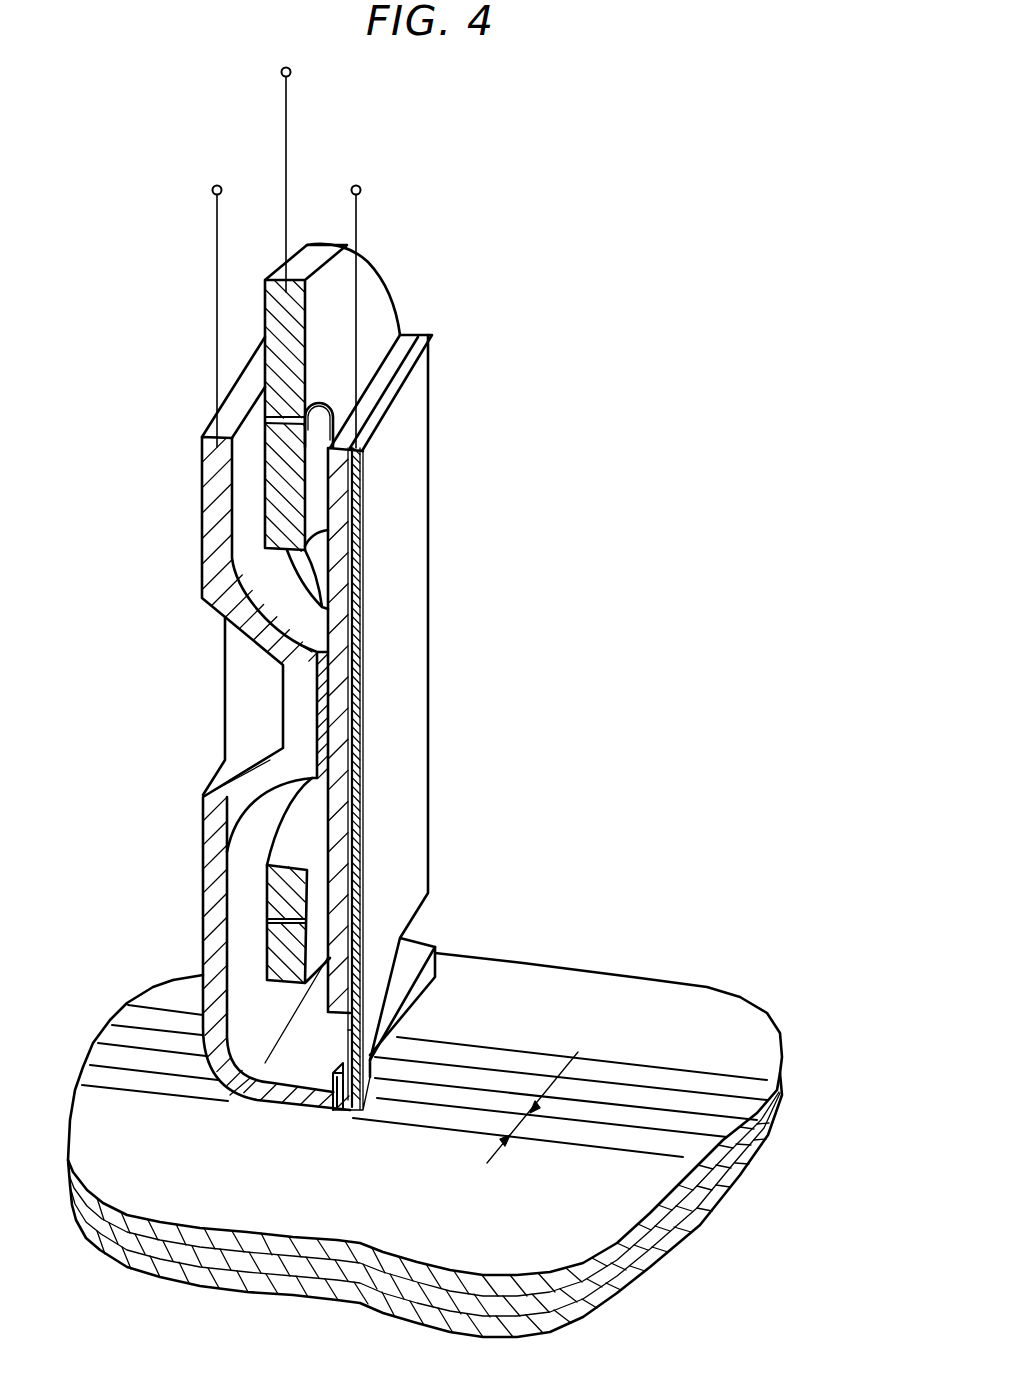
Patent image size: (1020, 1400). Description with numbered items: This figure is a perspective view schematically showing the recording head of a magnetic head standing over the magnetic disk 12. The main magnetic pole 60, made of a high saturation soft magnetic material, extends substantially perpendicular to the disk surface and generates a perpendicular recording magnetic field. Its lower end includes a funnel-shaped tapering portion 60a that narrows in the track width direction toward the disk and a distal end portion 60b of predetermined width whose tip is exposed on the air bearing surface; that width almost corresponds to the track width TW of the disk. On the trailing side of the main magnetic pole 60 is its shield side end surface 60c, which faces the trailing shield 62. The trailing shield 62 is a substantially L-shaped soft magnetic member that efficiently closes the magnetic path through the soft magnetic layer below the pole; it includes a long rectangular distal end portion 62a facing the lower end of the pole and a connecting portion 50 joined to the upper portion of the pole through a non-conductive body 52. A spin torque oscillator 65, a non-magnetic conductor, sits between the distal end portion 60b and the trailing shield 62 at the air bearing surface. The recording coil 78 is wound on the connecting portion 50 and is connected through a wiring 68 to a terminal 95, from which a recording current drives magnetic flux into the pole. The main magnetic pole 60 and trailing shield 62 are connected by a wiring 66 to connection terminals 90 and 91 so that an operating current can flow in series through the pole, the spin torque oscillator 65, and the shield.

The magnetic disk 12 is at (640, 1010).
The connecting portion 50 is at (290, 713).
The non-conductive body 52 is at (323, 677).
The main magnetic pole 60 is at (415, 638).
The tapering portion 60a is at (415, 985).
The distal end portion 60b is at (376, 1100).
The shield side end surface 60c is at (347, 1028).
The trailing shield 62 is at (202, 885).
The distal end portion 62a is at (252, 1094).
The spin torque oscillator 65 is at (337, 1123).
The wiring 66 is at (358, 308).
The wiring 68 is at (286, 103).
The recording coil 78 is at (262, 298).
The connection terminal 90 is at (356, 185).
The connection terminal 91 is at (217, 185).
The terminal 95 is at (281, 72).
The track width TW is at (532, 1123).